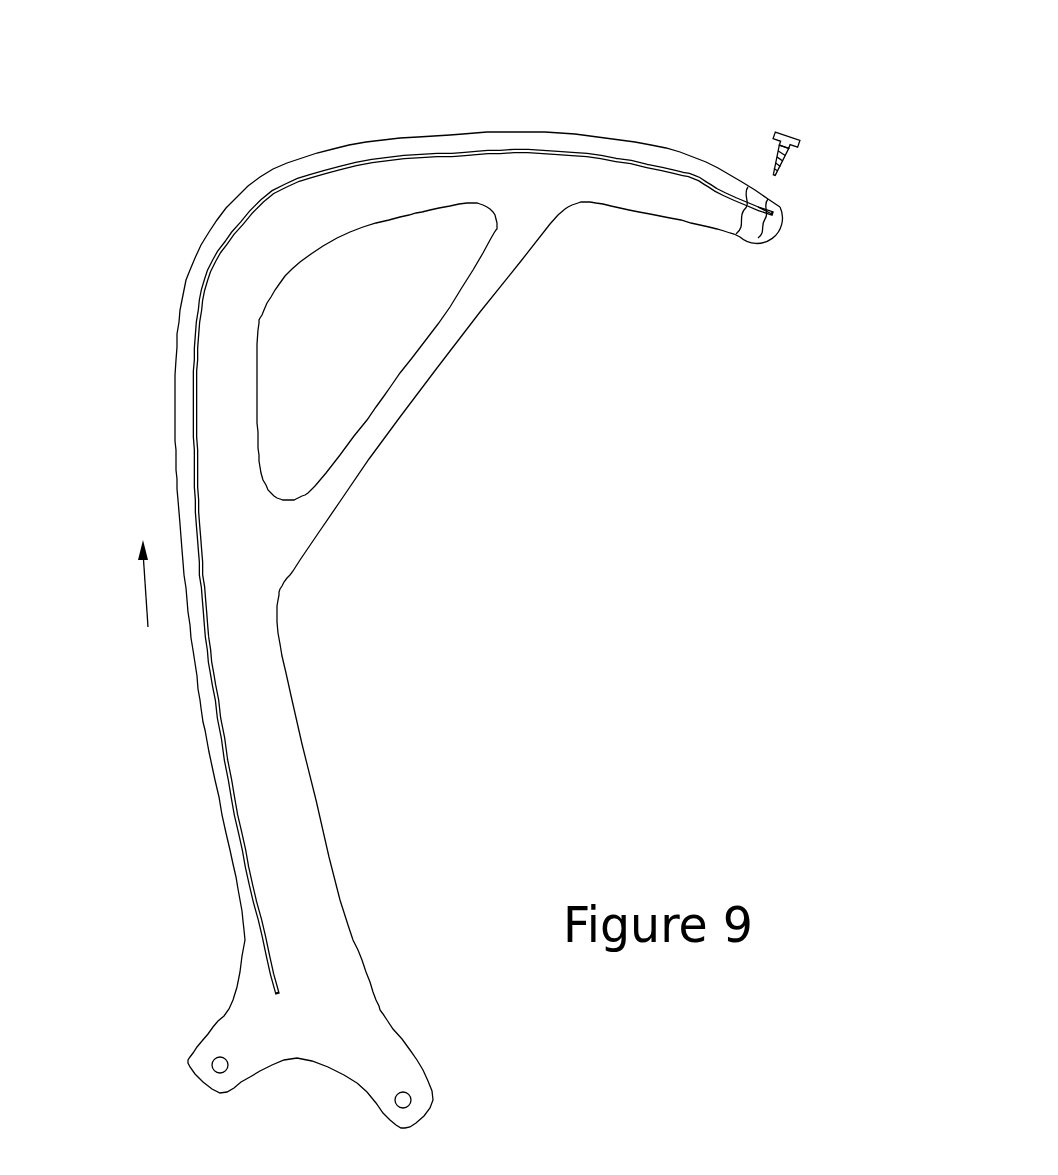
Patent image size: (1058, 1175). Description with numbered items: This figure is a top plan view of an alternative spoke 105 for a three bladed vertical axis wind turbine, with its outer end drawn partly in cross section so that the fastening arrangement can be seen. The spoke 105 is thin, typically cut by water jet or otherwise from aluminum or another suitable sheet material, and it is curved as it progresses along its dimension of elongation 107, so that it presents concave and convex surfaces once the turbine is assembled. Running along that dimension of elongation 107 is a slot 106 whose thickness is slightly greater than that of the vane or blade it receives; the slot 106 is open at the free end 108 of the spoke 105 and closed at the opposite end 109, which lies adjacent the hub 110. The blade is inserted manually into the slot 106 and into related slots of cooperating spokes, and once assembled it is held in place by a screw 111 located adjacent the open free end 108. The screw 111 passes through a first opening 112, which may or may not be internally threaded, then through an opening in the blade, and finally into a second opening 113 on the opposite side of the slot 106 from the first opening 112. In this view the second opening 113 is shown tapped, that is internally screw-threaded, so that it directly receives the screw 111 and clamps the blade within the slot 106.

The spoke 105 is at (380, 631).
The slot 106 is at (215, 716).
The dimension of elongation 107 is at (145, 582).
The free end 108 is at (805, 245).
The end adjacent the hub 109 is at (205, 977).
The hub 110 is at (308, 1032).
The screw 111 is at (755, 85).
The first opening 112 is at (768, 183).
The second opening 113 is at (731, 234).